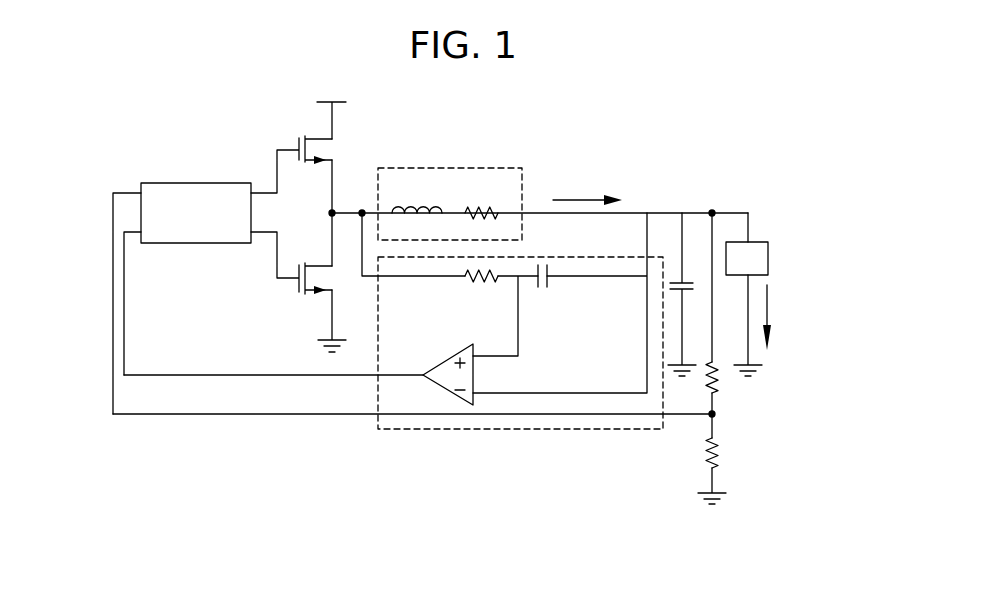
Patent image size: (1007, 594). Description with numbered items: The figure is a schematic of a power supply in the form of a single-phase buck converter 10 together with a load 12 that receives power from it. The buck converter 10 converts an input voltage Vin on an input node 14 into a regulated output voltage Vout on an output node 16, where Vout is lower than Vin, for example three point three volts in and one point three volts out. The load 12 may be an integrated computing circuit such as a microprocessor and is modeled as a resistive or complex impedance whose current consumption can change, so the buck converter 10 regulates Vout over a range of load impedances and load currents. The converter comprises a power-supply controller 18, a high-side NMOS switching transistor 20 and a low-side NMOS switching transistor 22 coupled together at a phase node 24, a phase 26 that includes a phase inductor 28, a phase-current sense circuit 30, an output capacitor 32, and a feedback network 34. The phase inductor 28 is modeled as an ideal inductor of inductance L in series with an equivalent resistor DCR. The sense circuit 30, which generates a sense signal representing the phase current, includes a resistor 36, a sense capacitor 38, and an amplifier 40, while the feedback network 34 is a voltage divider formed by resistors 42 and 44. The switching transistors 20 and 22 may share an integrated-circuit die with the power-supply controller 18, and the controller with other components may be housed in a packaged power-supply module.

The single-phase buck converter 10 is at (97, 120).
The load 12 is at (768, 258).
The input node 14 is at (328, 122).
The output node 16 is at (750, 213).
The power-supply controller 18 is at (188, 243).
The high-side NMOS switching transistor 20 is at (318, 148).
The low-side NMOS switching transistor 22 is at (302, 292).
The phase node 24 is at (330, 213).
The phase 26 is at (548, 138).
The phase inductor 28 is at (430, 168).
The phase-current sense circuit 30 is at (525, 430).
The output capacitor 32 is at (668, 284).
The feedback network 34 is at (662, 508).
The resistor 36 is at (478, 282).
The sense capacitor 38 is at (548, 288).
The amplifier 40 is at (443, 390).
The resistor 42 is at (718, 390).
The resistor 44 is at (705, 450).